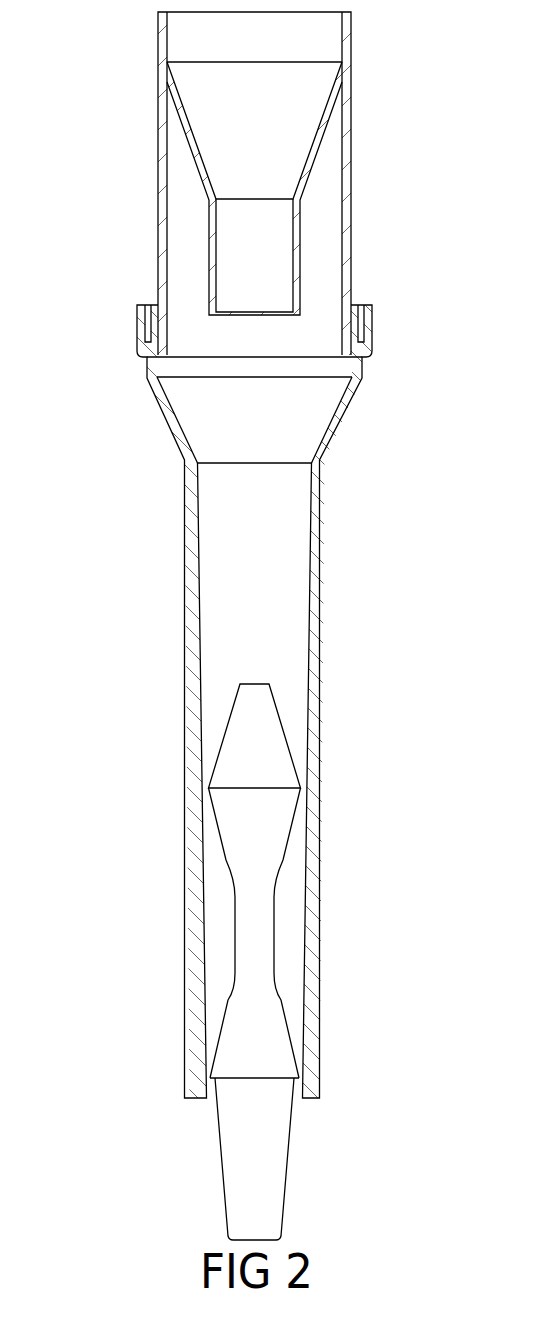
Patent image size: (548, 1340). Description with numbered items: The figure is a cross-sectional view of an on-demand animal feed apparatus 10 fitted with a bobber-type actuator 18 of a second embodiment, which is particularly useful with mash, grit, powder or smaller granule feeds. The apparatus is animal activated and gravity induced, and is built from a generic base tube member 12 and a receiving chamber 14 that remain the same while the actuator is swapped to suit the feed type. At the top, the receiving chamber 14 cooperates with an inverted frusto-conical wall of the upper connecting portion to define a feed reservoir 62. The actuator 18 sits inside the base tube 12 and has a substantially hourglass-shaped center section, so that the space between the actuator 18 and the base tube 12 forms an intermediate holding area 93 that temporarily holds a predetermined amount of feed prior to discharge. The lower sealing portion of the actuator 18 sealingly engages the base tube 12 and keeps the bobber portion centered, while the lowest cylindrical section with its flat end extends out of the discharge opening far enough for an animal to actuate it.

The animal feed apparatus 10 is at (122, 78).
The receiving chamber 14 is at (358, 204).
The base tube member 12 is at (155, 424).
The feed reservoir 62 is at (315, 405).
The bobber-type actuator 18 is at (291, 727).
The intermediate holding area 93 is at (287, 930).